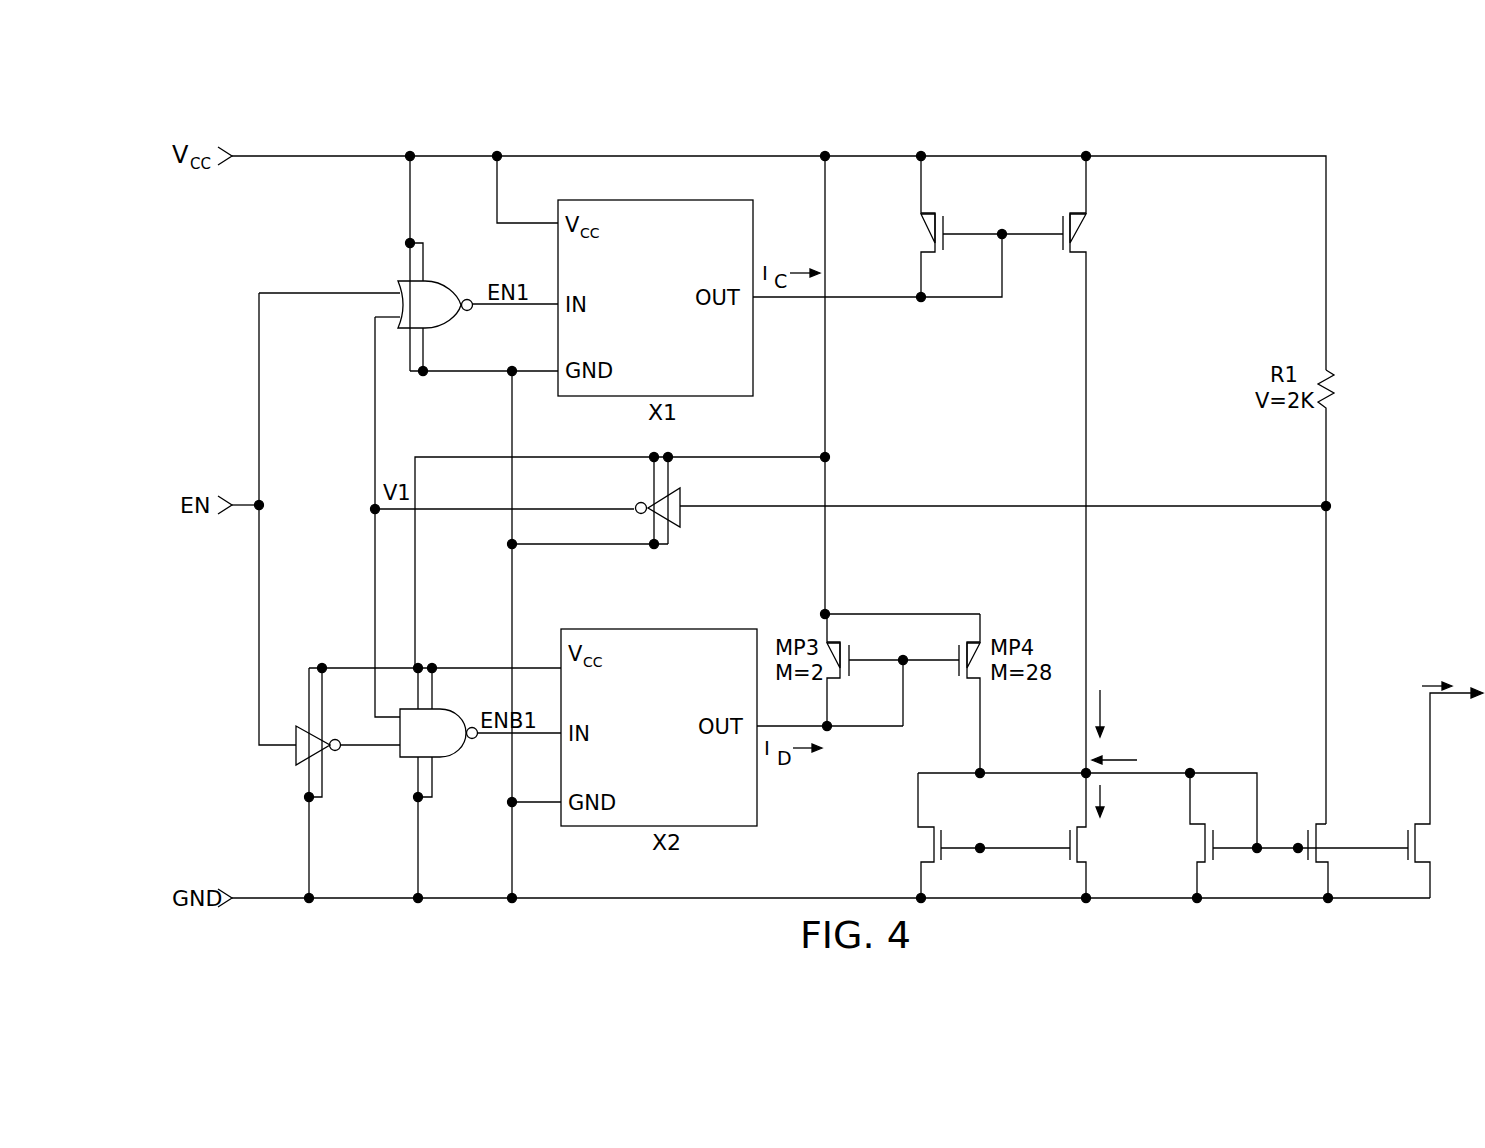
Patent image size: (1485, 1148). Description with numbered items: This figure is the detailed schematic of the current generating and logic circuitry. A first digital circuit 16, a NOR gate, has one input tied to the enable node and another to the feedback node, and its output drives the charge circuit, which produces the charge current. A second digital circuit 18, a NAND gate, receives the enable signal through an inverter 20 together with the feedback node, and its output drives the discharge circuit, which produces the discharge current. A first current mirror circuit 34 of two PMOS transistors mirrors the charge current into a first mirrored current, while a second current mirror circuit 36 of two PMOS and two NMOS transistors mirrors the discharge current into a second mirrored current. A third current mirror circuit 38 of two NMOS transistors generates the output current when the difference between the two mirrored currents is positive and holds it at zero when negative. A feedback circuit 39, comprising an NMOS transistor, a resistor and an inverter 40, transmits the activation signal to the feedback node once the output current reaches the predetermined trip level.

The first digital circuit 16 is at (385, 264).
The second digital circuit 18 is at (396, 777).
The inverter 20 is at (305, 760).
The first current mirror circuit 34 is at (1003, 148).
The second current mirror circuit 36 is at (822, 865).
The third current mirror circuit 38 is at (1234, 906).
The feedback circuit 39 is at (448, 440).
The inverter 40 is at (670, 518).